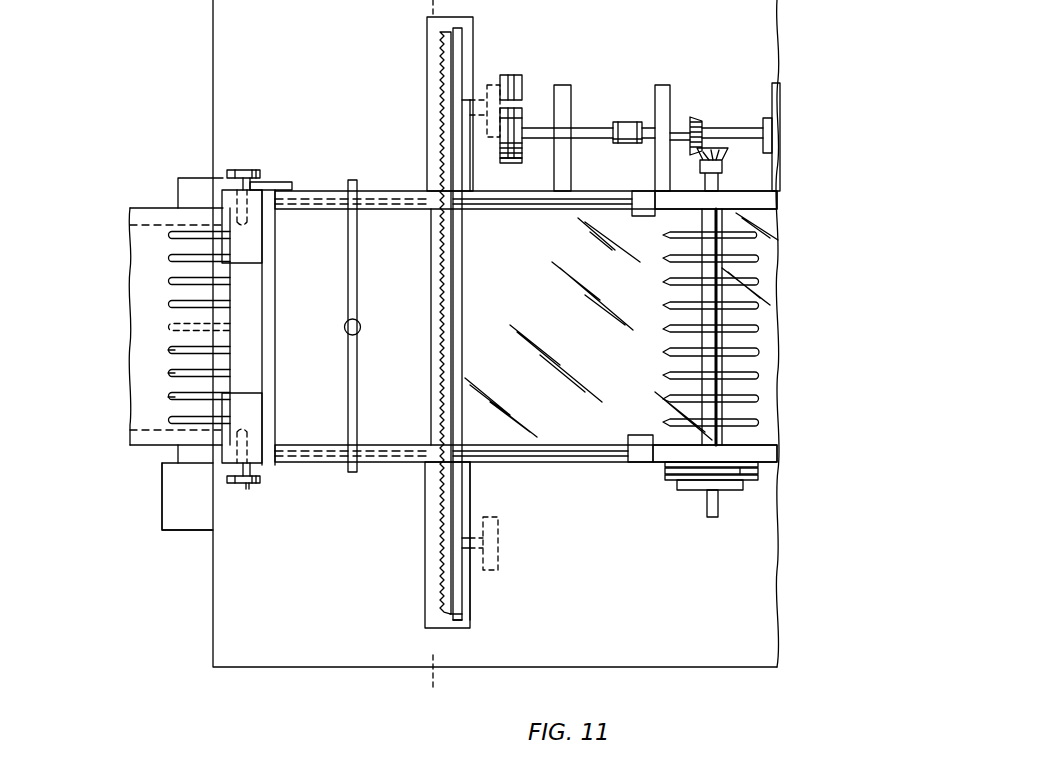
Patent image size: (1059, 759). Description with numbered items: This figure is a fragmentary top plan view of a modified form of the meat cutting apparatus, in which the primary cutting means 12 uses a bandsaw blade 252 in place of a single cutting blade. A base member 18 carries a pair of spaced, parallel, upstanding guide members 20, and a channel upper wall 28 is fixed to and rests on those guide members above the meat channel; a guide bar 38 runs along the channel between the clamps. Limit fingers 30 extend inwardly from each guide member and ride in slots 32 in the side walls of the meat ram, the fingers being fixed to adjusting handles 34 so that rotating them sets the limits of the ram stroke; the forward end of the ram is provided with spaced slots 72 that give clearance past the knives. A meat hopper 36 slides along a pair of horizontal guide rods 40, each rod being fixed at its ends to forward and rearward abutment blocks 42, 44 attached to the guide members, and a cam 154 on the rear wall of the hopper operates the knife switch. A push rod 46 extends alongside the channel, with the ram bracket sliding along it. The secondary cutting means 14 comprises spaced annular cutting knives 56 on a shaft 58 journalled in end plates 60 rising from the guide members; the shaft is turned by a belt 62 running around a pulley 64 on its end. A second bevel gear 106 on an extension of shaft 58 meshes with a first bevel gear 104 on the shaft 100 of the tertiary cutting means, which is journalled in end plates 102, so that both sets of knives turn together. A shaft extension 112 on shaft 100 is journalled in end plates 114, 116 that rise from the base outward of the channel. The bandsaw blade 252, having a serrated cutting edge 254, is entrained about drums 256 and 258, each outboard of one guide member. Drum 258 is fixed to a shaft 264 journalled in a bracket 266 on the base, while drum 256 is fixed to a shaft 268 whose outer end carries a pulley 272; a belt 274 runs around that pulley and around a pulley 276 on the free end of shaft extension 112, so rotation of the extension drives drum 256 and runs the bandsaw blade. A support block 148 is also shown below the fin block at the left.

The primary cutting means 12 is at (461, 291).
The secondary cutting means 14 is at (718, 563).
The base member 18 is at (348, 610).
The guide members 20 is at (590, 463).
The channel upper wall 28 is at (540, 299).
The limit fingers 30 is at (232, 208).
The slots 32 is at (150, 226).
The adjusting handles 34 is at (245, 170).
The meat hopper 36 is at (320, 191).
The guide bar 38 is at (410, 394).
The guide rods 40 is at (547, 196).
The forward abutment blocks 42 is at (637, 213).
The rearward abutment blocks 44 is at (248, 250).
The push rod 46 is at (137, 327).
The cutting knives 56 is at (665, 305).
The shaft 58 is at (708, 512).
The end plates 60 is at (752, 195).
The belt 62 is at (752, 470).
The pulley 64 is at (670, 480).
The slots 72 is at (168, 398).
The shaft 100 is at (743, 128).
The end plates 102 is at (777, 107).
The first bevel gear 104 is at (698, 117).
The second bevel gear 106 is at (715, 148).
The shaft extension 112 is at (540, 132).
The end plate 114 is at (663, 85).
The end plate 116 is at (567, 85).
The support block 148 is at (173, 502).
The cam 154 is at (278, 182).
The bandsaw blade 252 is at (443, 61).
The serrated cutting edge 254 is at (442, 492).
The drum 256 is at (458, 42).
The drum 258 is at (458, 614).
The shaft 264 is at (483, 552).
The bracket 266 is at (498, 529).
The shaft 268 is at (468, 100).
The pulley 272 is at (500, 85).
The belt 274 is at (511, 163).
The pulley 276 is at (522, 117).